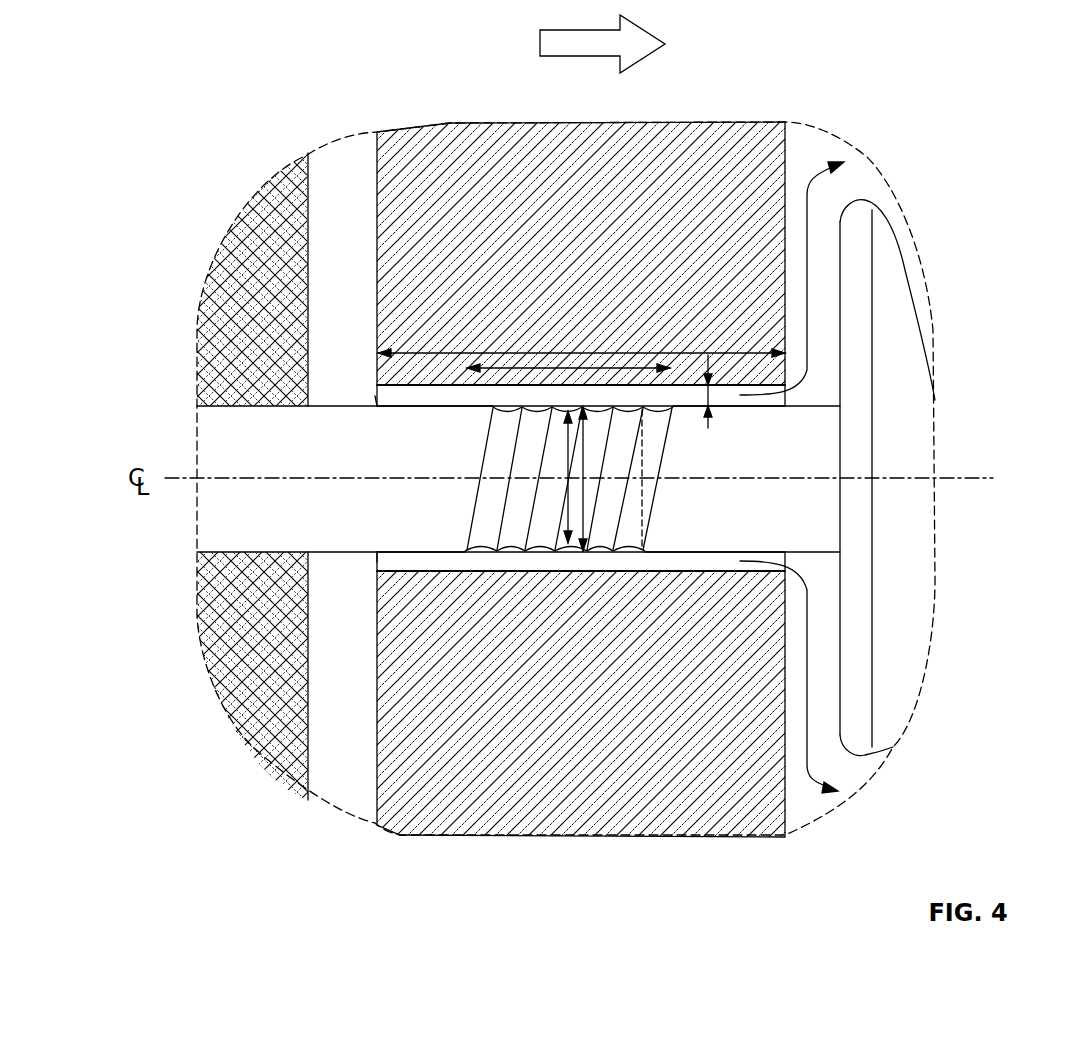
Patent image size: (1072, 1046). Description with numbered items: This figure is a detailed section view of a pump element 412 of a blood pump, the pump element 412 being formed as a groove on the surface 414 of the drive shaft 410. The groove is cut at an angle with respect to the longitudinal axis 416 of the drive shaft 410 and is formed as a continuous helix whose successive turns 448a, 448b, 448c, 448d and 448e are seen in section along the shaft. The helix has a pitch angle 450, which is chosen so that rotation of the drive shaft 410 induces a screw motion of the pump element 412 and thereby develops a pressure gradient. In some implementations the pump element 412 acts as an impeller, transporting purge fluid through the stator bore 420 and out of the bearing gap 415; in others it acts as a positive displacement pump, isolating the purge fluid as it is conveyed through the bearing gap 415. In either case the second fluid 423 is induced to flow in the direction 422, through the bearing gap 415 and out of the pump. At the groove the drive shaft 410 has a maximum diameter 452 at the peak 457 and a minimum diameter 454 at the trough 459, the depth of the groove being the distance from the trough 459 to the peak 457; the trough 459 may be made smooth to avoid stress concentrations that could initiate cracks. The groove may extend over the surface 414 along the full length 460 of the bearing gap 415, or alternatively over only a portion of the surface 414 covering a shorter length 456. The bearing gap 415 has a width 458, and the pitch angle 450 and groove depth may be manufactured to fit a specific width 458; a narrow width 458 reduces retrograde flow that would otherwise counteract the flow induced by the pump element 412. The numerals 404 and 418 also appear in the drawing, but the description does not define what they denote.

The valve seat flange 404 is at (907, 272).
The drive shaft 410 is at (457, 553).
The pump element 412 is at (630, 553).
The surface of the drive shaft 414 is at (460, 406).
The bearing gap 415 is at (377, 562).
The longitudinal axis 416 is at (913, 477).
The nut body section 418 is at (476, 803).
The stator bore 420 is at (375, 396).
The flow direction 422 is at (567, 27).
The second fluid 423 is at (808, 182).
The turn of the helical groove 448a is at (482, 553).
The turn of the helical groove 448b is at (512, 553).
The turn of the helical groove 448c is at (548, 553).
The turn of the helical groove 448d is at (600, 553).
The turn of the helical groove 448e is at (637, 562).
The pitch angle 450 is at (630, 500).
The maximum diameter 452 is at (577, 457).
The minimum diameter 454 is at (567, 437).
The length of the grooves 456 is at (625, 352).
The peak of the groove 457 is at (531, 407).
The width of the bearing gap 458 is at (708, 428).
The trough of the groove 459 is at (525, 407).
The length of the bearing gap 460 is at (610, 366).